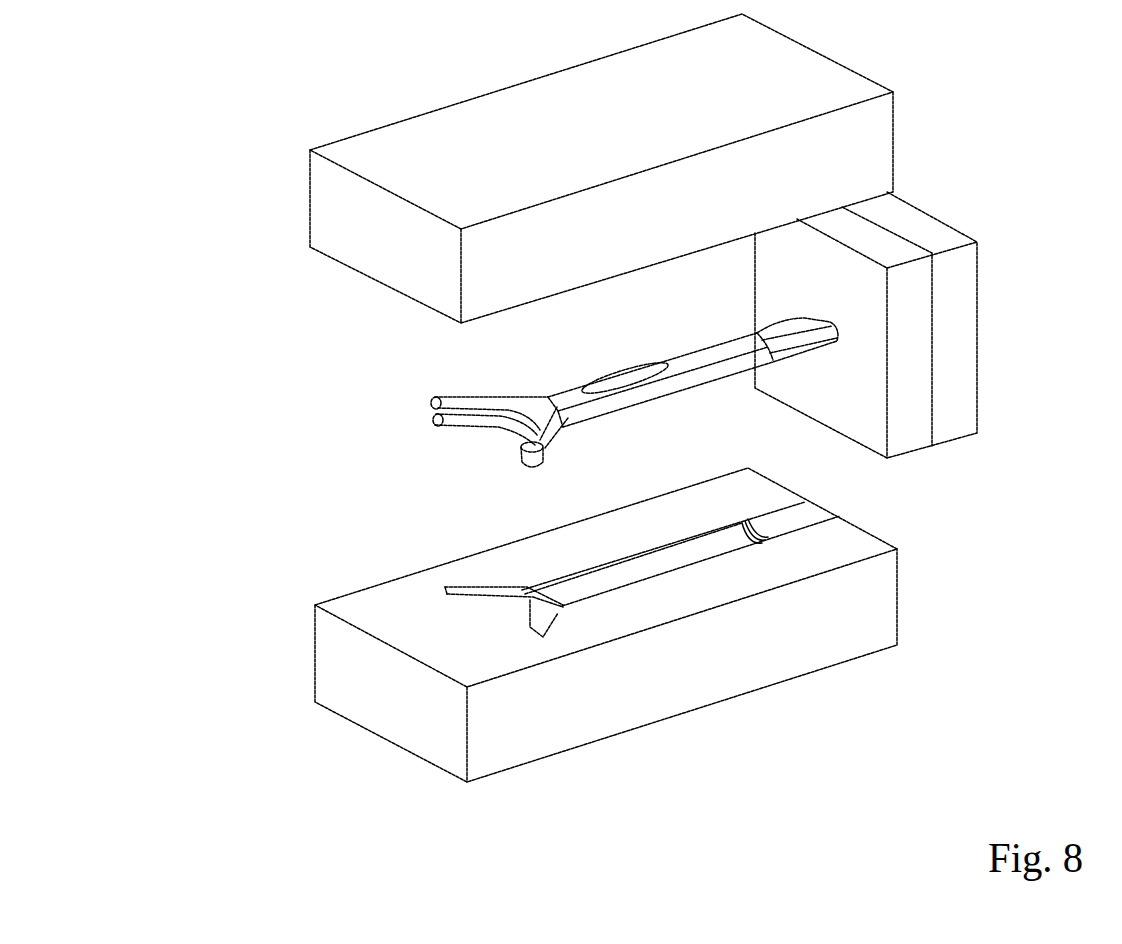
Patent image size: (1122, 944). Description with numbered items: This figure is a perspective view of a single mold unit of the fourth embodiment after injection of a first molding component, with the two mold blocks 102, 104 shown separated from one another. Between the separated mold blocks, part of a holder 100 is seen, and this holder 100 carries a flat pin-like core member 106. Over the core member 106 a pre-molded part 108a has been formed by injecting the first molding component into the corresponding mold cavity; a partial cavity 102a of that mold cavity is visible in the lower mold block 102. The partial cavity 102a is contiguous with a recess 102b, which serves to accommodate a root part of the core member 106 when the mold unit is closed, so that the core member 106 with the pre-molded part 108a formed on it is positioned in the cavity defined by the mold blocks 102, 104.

The holder 100 is at (912, 385).
The mold block 102 is at (690, 698).
The partial cavity 102a is at (607, 583).
The recess 102b is at (808, 516).
The mold block 104 is at (340, 218).
The core member 106 is at (805, 335).
The pre-molded part 108a is at (695, 363).